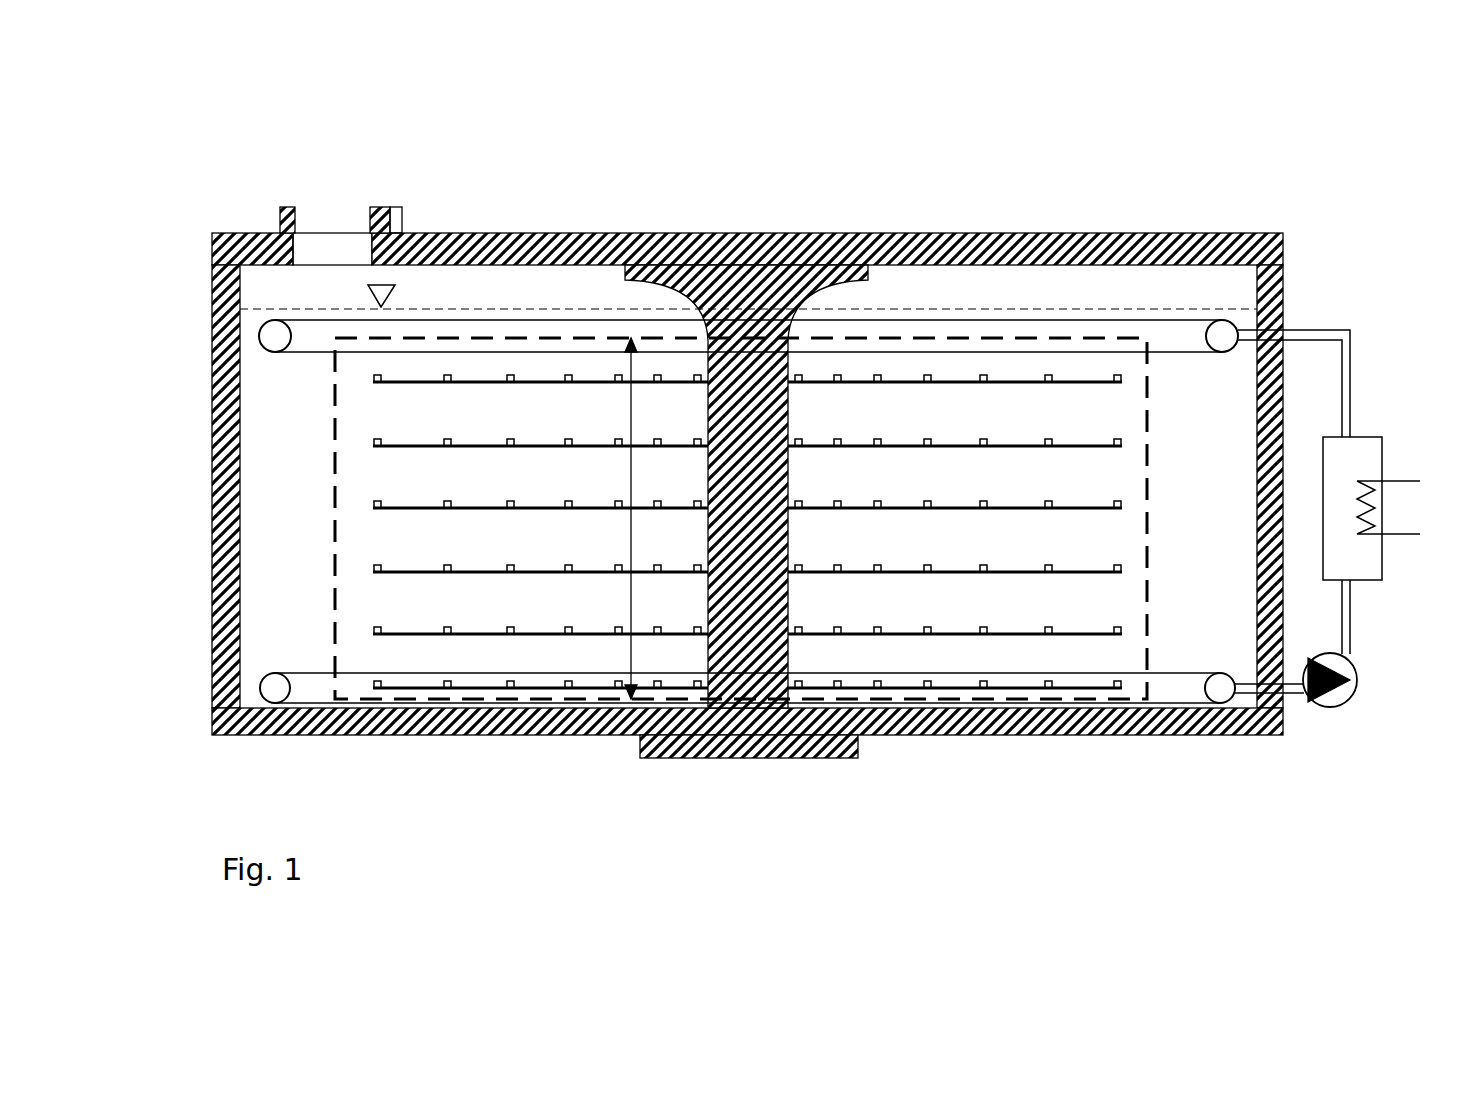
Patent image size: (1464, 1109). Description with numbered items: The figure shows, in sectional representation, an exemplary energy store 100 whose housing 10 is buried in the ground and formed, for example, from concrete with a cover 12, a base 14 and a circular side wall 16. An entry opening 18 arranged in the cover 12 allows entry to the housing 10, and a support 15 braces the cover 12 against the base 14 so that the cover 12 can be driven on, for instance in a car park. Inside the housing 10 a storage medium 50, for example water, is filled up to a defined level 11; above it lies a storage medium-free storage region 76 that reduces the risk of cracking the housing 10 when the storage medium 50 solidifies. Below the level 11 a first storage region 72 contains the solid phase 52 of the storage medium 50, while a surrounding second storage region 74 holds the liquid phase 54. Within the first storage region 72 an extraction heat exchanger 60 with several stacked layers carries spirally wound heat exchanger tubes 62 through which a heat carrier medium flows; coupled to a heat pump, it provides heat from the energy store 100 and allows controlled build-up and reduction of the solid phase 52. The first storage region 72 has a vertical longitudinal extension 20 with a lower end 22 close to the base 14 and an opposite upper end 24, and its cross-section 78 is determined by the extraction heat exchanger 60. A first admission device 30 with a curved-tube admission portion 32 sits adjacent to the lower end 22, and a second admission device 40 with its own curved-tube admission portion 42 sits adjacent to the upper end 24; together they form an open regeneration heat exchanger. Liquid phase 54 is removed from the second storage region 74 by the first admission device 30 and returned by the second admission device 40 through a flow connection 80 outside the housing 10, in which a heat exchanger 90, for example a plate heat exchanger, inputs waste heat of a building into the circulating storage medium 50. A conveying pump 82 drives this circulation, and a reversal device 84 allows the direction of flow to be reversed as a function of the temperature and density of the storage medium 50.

The housing 10 is at (1037, 232).
The level 11 is at (922, 307).
The cover 12 is at (782, 232).
The base 14 is at (1165, 733).
The support 15 is at (707, 655).
The side wall 16 is at (213, 595).
The entry opening 18 is at (382, 208).
The longitudinal extension 20 is at (628, 420).
The lower end 22 is at (330, 695).
The upper end 24 is at (675, 299).
The first admission device 30 is at (195, 746).
The admission portion 32 is at (262, 695).
The second admission device 40 is at (201, 268).
The admission portion 42 is at (262, 333).
The storage medium 50 is at (263, 383).
The solid phase 52 is at (430, 494).
The liquid phase 54 is at (302, 557).
The extraction heat exchanger 60 is at (860, 578).
The heat exchanger tubes 62 is at (1047, 377).
The first storage region 72 is at (478, 337).
The second storage region 74 is at (270, 463).
The storage medium-free storage region 76 is at (1017, 302).
The cross-section 78 is at (428, 337).
The flow connection 80 is at (1350, 328).
The conveying pump 82 is at (1372, 725).
The reversal device 84 is at (1323, 708).
The heat exchanger 90 is at (1380, 437).
The energy store 100 is at (1237, 222).